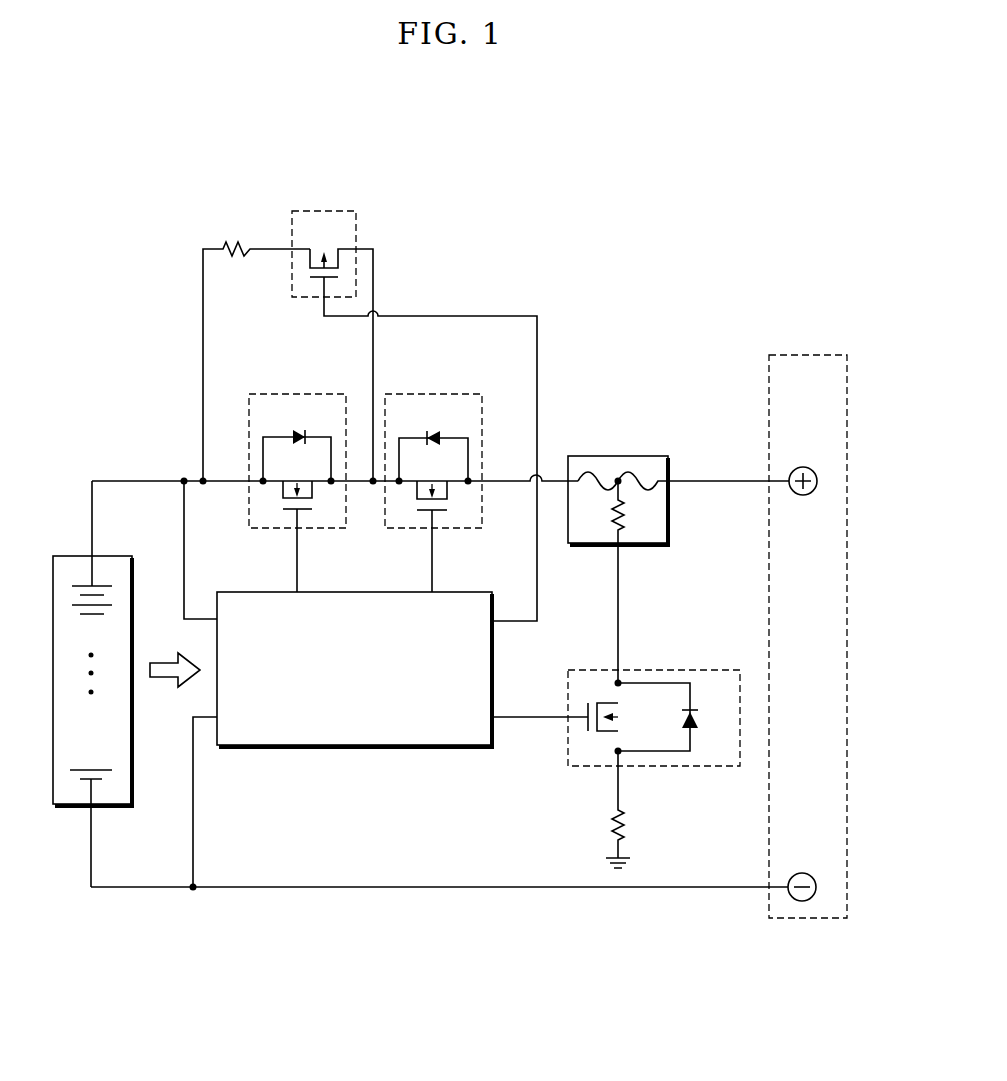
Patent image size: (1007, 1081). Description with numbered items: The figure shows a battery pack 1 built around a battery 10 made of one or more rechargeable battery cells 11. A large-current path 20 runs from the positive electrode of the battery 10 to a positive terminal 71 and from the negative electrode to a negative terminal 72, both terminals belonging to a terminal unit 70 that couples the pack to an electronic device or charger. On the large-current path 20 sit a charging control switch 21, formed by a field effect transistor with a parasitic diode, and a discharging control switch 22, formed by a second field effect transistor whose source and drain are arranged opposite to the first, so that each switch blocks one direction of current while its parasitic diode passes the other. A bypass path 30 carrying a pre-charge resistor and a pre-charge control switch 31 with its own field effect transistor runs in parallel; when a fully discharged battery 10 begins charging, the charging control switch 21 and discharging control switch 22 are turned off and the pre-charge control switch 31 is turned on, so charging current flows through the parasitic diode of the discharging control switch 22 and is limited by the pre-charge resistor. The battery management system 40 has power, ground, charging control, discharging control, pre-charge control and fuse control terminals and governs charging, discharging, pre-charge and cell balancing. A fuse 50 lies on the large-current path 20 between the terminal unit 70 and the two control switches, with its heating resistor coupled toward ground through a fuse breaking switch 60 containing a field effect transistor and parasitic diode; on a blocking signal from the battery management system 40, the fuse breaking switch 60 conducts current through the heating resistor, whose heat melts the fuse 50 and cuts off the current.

The battery pack 1 is at (666, 208).
The battery 10 is at (108, 556).
The battery cell 11 is at (100, 586).
The large-current path 20 is at (515, 477).
The charging control switch 21 is at (300, 394).
The discharging control switch 22 is at (437, 394).
The bypass path 30 is at (274, 246).
The pre-charge control switch 31 is at (330, 211).
The battery management system 40 is at (455, 592).
The fuse 50 is at (620, 456).
The fuse breaking switch 60 is at (683, 670).
The terminal unit 70 is at (801, 352).
The positive terminal 71 is at (803, 467).
The negative terminal 72 is at (802, 872).